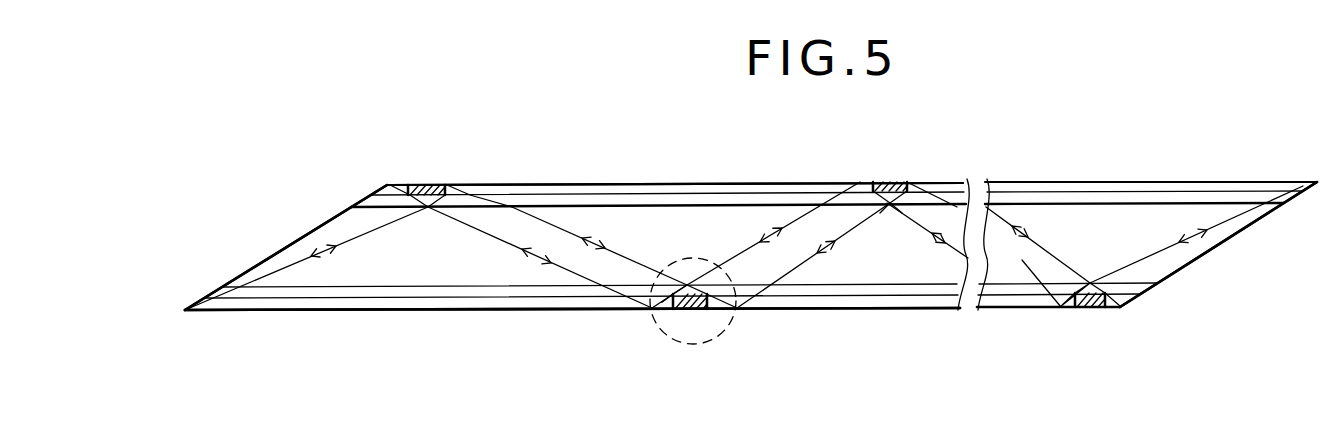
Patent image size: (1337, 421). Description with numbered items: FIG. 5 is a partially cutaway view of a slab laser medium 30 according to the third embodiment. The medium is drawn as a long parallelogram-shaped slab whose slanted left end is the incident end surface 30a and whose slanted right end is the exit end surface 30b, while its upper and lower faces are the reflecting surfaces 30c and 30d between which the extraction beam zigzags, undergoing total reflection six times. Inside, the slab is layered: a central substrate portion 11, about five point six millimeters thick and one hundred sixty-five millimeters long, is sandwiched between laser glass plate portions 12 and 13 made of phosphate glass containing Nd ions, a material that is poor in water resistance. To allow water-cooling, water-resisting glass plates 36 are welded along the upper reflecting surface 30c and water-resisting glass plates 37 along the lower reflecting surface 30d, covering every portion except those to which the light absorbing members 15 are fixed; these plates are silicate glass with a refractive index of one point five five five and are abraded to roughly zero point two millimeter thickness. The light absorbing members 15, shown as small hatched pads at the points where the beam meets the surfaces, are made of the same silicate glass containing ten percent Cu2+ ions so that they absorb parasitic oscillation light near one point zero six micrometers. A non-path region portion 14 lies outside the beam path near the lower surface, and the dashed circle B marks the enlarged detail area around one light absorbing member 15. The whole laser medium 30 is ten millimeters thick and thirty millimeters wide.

The laser medium 30 is at (986, 412).
The incident end surface 30a is at (328, 220).
The exit end surface 30b is at (1202, 262).
The reflecting surface 30c is at (698, 186).
The reflecting surface 30d is at (556, 302).
The substrate portion 11 is at (1160, 217).
The laser glass plate portion 12 is at (636, 204).
The laser glass plate portion 13 is at (485, 300).
The non-path region portion 14 is at (668, 307).
The light absorbing member 15 is at (440, 195).
The water-resisting glass plate 36 is at (812, 186).
The water-resisting glass plate 37 is at (405, 309).
The enlarged region B is at (738, 335).